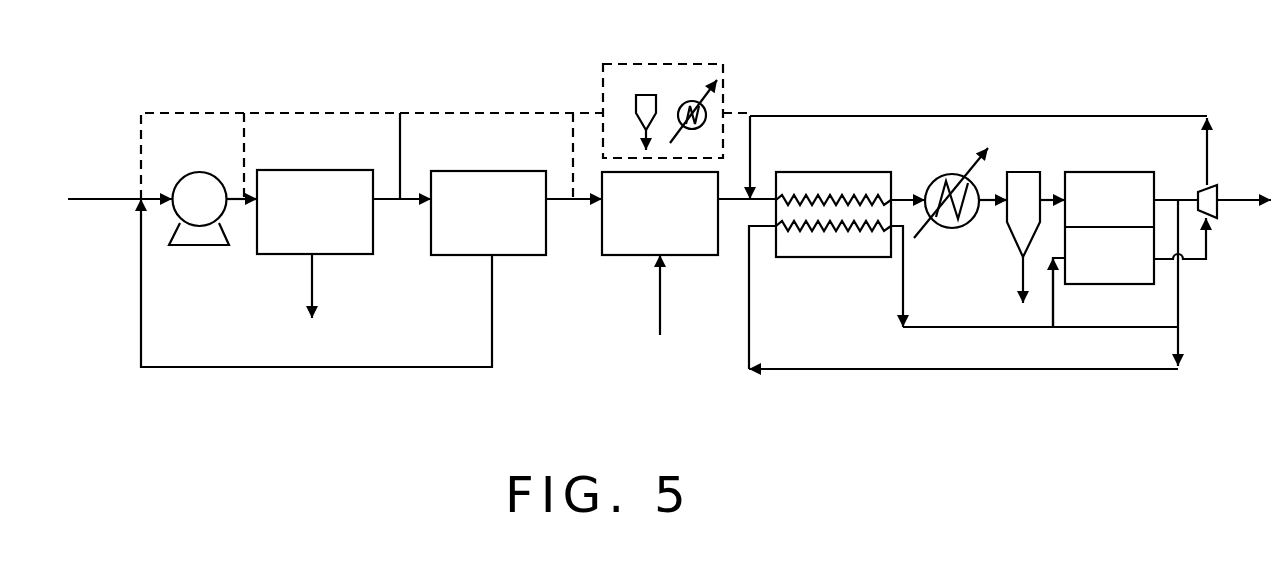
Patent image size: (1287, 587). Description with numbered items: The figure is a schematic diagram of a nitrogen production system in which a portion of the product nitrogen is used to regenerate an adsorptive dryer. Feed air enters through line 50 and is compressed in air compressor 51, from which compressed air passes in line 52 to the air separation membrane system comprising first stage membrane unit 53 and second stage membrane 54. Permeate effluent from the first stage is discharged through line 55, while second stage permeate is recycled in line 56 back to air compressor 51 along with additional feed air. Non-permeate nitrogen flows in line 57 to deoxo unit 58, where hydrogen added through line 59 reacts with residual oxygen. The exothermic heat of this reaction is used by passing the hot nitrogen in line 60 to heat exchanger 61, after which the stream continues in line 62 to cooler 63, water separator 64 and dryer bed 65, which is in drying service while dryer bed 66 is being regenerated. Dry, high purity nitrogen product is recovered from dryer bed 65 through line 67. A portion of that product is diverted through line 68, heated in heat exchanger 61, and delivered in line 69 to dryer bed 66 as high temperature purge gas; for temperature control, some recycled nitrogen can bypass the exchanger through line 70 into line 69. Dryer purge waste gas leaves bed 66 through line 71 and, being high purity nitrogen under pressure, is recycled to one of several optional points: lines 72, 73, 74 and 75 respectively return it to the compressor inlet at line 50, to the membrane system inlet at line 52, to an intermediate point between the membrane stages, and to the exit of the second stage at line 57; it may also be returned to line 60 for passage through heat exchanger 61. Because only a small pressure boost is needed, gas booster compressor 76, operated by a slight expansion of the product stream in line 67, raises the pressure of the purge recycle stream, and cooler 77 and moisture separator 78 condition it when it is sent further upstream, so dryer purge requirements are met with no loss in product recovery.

The line 50 is at (119, 198).
The air compressor 51 is at (190, 172).
The line 52 is at (244, 207).
The first stage membrane unit 53 is at (323, 170).
The second stage membrane 54 is at (497, 171).
The line 55 is at (313, 282).
The line 56 is at (338, 367).
The line 57 is at (576, 203).
The deoxo unit 58 is at (625, 258).
The line 59 is at (661, 312).
The line 60 is at (744, 210).
The heat exchanger 61 is at (808, 172).
The line 62 is at (916, 196).
The cooler 63 is at (950, 174).
The water separator 64 is at (1023, 172).
The dryer bed 65 is at (1100, 172).
The dryer bed 66 is at (1126, 284).
The line 67 is at (1232, 199).
The line 68 is at (1030, 369).
The line 69 is at (1015, 328).
The line 70 is at (1130, 328).
The line 71 is at (1207, 244).
The line 72 is at (141, 132).
The line 73 is at (245, 140).
The line 74 is at (403, 156).
The line 75 is at (572, 143).
The gas booster compressor 76 is at (1208, 183).
The cooler 77 is at (687, 100).
The moisture separator 78 is at (640, 95).